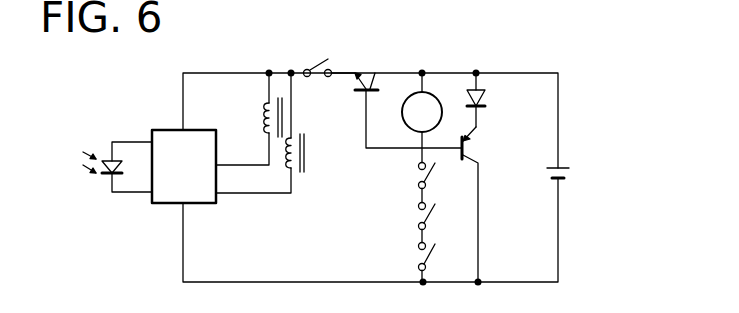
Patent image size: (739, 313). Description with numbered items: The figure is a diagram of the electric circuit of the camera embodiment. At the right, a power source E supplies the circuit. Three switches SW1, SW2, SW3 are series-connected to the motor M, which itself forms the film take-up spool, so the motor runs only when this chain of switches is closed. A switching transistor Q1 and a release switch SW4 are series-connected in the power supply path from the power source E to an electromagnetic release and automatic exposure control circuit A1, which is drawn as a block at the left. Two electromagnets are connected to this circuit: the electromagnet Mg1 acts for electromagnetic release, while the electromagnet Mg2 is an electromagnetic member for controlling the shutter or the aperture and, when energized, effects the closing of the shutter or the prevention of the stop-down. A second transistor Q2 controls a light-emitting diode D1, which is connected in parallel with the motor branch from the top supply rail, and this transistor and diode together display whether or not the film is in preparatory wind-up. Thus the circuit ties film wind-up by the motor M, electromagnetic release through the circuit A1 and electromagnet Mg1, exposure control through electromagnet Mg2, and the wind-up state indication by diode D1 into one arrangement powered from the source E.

The electromagnetic release and automatic exposure control circuit A1 is at (184, 166).
The electromagnet Mg1 is at (307, 155).
The electromagnet Mg2 is at (262, 107).
The switch SW1 is at (418, 167).
The switch SW2 is at (418, 207).
The switch SW3 is at (418, 246).
The release switch SW4 is at (317, 60).
The switching transistor Q1 is at (360, 91).
The transistor Q2 is at (470, 134).
The light-emitting diode D1 is at (485, 96).
The motor M is at (422, 118).
The power source E is at (572, 174).